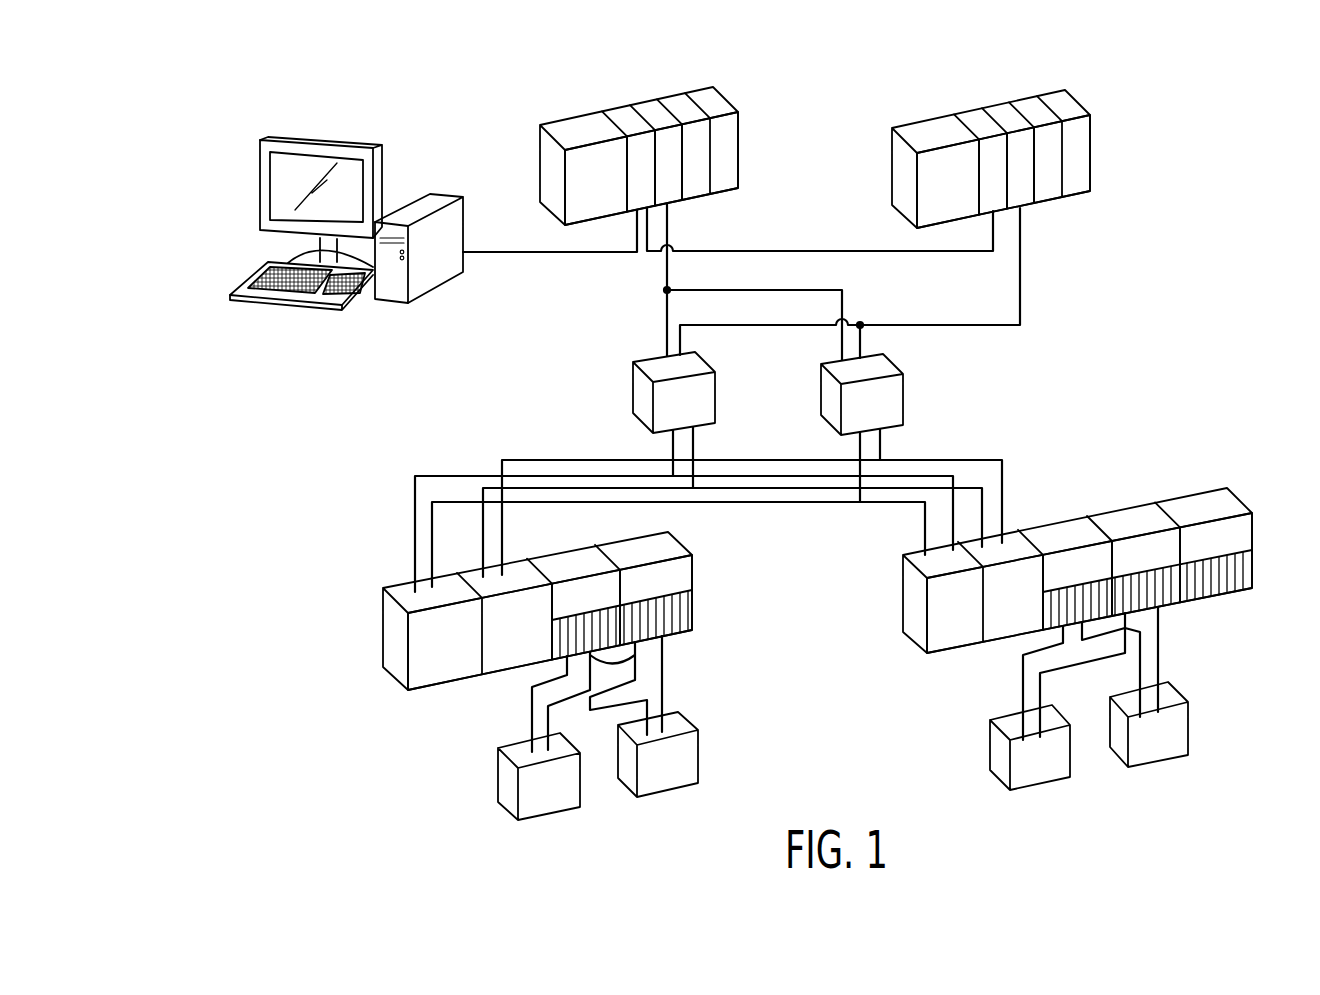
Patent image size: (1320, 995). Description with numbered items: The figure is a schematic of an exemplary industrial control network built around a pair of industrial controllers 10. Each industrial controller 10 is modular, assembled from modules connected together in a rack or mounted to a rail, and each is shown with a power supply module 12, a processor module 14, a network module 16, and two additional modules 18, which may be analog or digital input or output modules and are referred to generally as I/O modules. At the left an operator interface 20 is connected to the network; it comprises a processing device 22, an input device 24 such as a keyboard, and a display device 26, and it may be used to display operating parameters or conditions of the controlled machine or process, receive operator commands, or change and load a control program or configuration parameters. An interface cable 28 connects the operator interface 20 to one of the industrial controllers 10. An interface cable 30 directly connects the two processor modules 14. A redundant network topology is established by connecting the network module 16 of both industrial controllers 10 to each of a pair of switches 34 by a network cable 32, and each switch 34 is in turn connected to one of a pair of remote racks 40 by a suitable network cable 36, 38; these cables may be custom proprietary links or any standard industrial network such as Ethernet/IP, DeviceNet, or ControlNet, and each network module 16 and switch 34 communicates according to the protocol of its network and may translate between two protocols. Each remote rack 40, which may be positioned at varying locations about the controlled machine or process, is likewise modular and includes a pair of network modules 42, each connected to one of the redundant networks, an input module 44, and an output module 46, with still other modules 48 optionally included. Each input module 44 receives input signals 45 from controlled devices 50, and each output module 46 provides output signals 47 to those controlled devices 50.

The industrial controller 10 is at (534, 78).
The power supply module 12 is at (585, 128).
The processor module 14 is at (621, 118).
The network module 16 is at (658, 110).
The additional modules 18 is at (709, 104).
The operator interface 20 is at (229, 105).
The processing device 22 is at (433, 200).
The input device 24 is at (262, 277).
The display device 26 is at (260, 183).
The interface cable 28 is at (548, 253).
The interface cable 30 is at (820, 251).
The network cable 32 is at (667, 282).
The switch 34 is at (641, 390).
The network cable 36 is at (432, 527).
The network cable 38 is at (484, 538).
The remote rack 40 is at (351, 629).
The network module 42 is at (455, 655).
The input module 44 is at (602, 606).
The input signals 45 is at (532, 706).
The output module 46 is at (667, 596).
The output signals 47 is at (548, 728).
The other modules 48 is at (1230, 553).
The controlled devices 50 is at (564, 803).